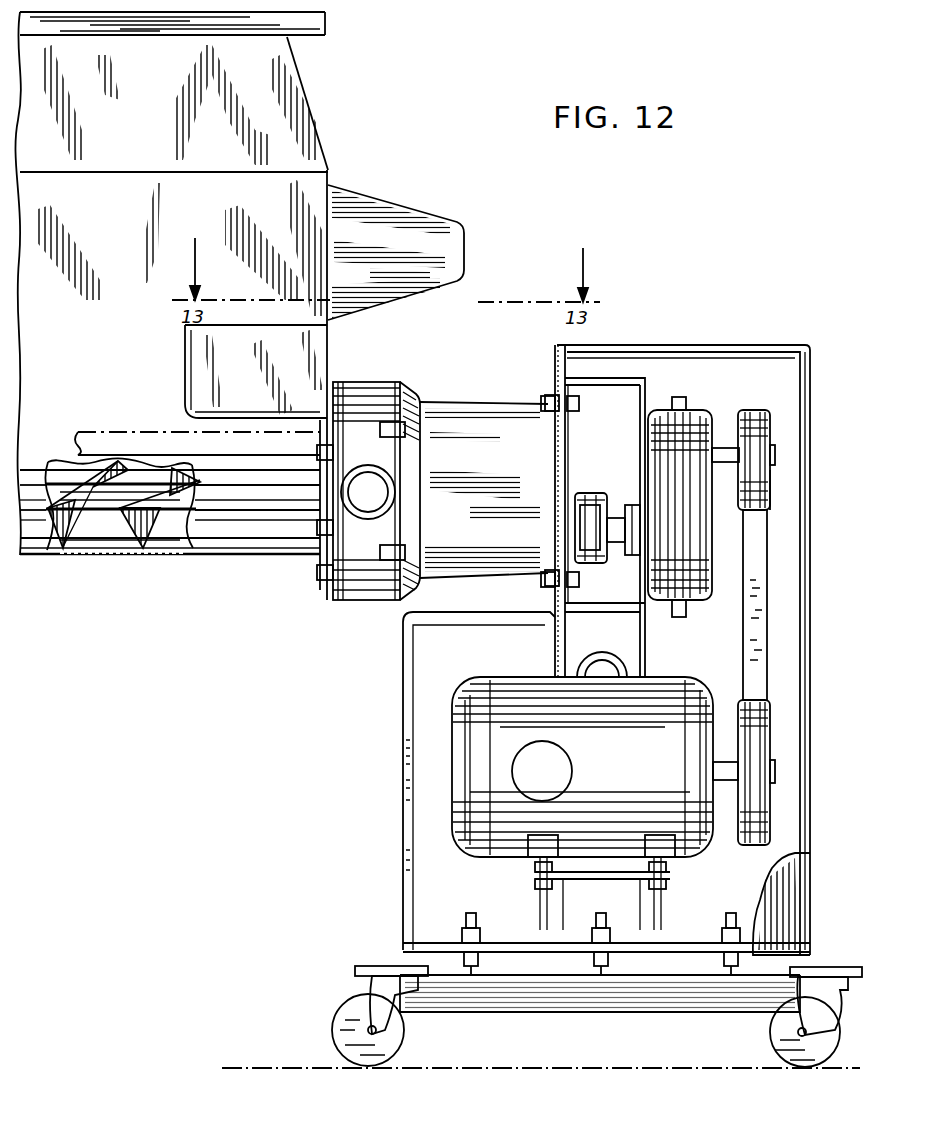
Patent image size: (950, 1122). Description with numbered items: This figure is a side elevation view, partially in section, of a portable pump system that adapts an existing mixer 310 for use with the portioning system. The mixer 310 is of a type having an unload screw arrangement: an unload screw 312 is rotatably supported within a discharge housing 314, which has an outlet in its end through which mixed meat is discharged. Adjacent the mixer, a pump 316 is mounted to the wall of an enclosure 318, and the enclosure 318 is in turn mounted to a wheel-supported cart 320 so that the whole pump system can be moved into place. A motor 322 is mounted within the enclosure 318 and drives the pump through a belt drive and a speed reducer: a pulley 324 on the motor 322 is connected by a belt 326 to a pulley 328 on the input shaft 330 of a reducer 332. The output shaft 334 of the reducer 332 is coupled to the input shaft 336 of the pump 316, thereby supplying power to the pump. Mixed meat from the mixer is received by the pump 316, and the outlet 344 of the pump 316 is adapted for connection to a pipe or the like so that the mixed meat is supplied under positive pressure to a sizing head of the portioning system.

The mixer 310 is at (350, 93).
The unload screw 312 is at (104, 532).
The discharge housing 314 is at (168, 560).
The pump 316 is at (412, 388).
The enclosure 318 is at (632, 345).
The wheel-supported cart 320 is at (495, 1012).
The motor 322 is at (515, 677).
The pulley 324 is at (735, 800).
The belt 326 is at (745, 633).
The pulley 328 is at (773, 488).
The input shaft 330 is at (775, 453).
The reducer 332 is at (700, 415).
The output shaft 334 is at (627, 510).
The input shaft 336 is at (574, 510).
The outlet 344 is at (363, 518).